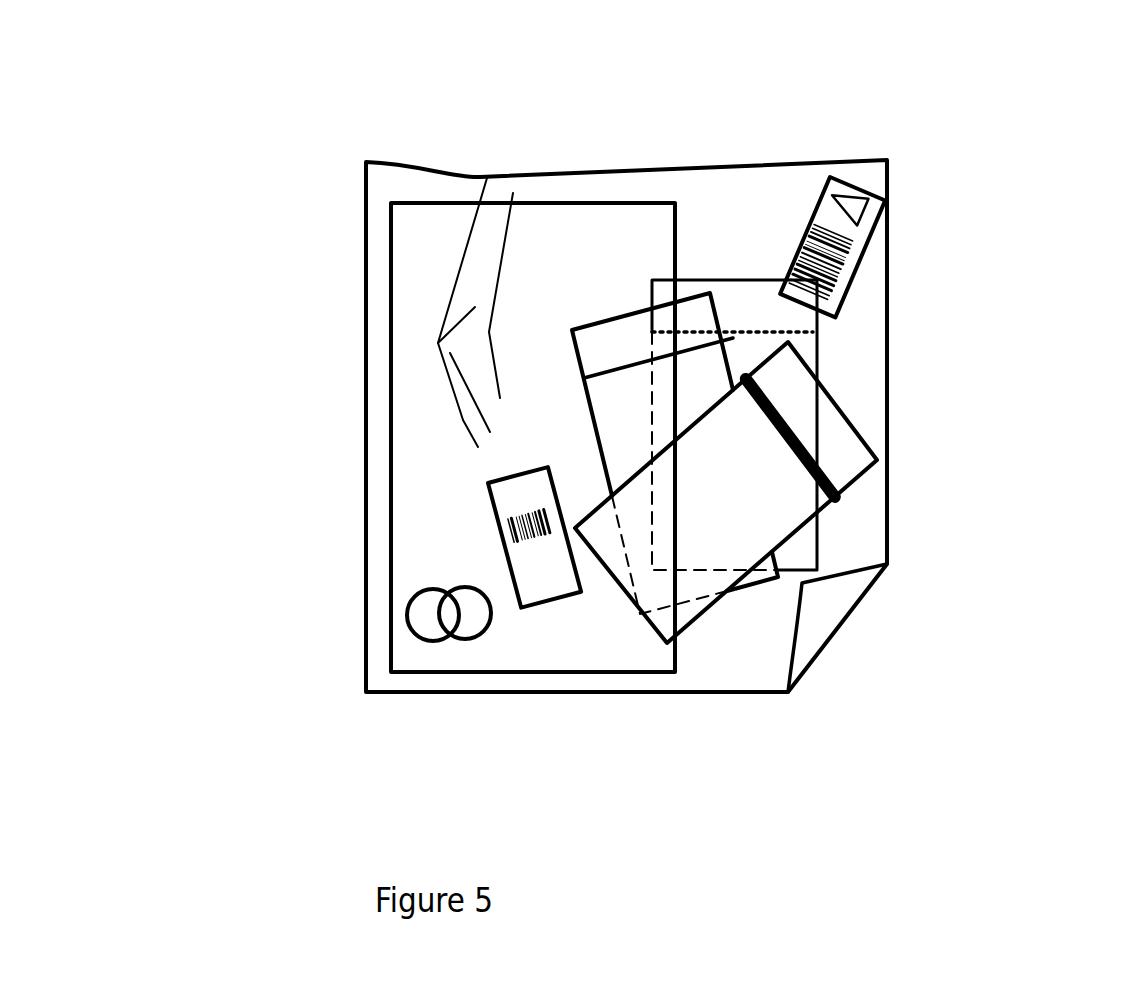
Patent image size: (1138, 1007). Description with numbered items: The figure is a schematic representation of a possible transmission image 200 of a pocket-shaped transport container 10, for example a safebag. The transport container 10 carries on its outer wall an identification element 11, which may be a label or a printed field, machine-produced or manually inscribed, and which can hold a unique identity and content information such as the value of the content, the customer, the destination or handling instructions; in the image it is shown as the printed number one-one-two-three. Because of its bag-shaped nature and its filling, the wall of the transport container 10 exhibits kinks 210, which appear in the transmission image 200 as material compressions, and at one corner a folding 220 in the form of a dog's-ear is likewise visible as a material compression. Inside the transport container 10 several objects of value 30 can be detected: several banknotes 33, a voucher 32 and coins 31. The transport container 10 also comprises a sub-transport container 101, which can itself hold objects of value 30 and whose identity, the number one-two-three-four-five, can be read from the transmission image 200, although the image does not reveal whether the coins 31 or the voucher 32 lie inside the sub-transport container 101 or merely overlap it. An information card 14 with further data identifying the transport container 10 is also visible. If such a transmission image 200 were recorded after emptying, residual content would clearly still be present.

The transmission image 200 is at (950, 158).
The transport container 10 is at (678, 692).
The folding 220 is at (822, 627).
The sub-transport container 101 is at (410, 202).
The identification element 11 is at (700, 208).
The kinks 210 is at (448, 302).
The information card 14 is at (845, 177).
The objects of value 30 is at (575, 652).
The banknotes 33 is at (727, 365).
The coins 31 is at (442, 592).
The voucher 32 is at (537, 610).